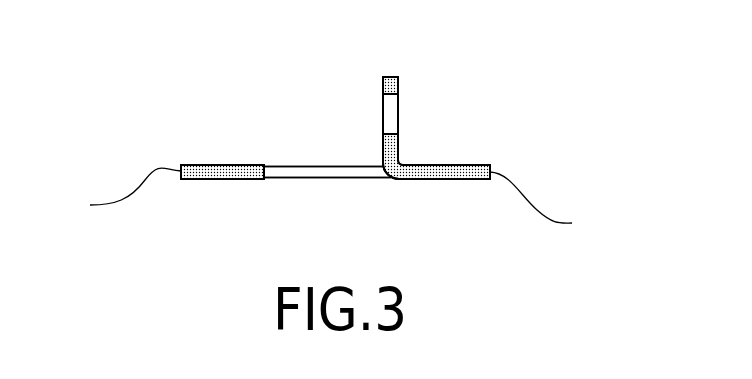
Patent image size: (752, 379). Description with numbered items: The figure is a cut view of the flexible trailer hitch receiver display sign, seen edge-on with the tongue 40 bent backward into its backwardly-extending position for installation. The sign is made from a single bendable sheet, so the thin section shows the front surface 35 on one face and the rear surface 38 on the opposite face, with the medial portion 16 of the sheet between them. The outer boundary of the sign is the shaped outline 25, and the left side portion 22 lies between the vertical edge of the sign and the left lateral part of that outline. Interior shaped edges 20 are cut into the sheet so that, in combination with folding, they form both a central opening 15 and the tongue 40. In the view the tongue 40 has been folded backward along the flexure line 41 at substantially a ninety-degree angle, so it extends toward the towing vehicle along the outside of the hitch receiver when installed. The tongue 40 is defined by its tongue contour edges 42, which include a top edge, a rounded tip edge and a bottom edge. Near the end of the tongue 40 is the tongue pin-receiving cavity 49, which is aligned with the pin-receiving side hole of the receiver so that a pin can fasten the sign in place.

The central opening 15 is at (290, 152).
The medial portion 16 is at (183, 180).
The interior shaped edges 20 is at (268, 178).
The left side portion 22 is at (220, 158).
The shaped outline 25 is at (334, 202).
The front surface 35 is at (243, 179).
The rear surface 38 is at (193, 165).
The tongue 40 is at (360, 105).
The flexure line 41 is at (400, 164).
The tongue contour edges 42 is at (390, 77).
The tongue pin-receiving cavity 49 is at (403, 105).